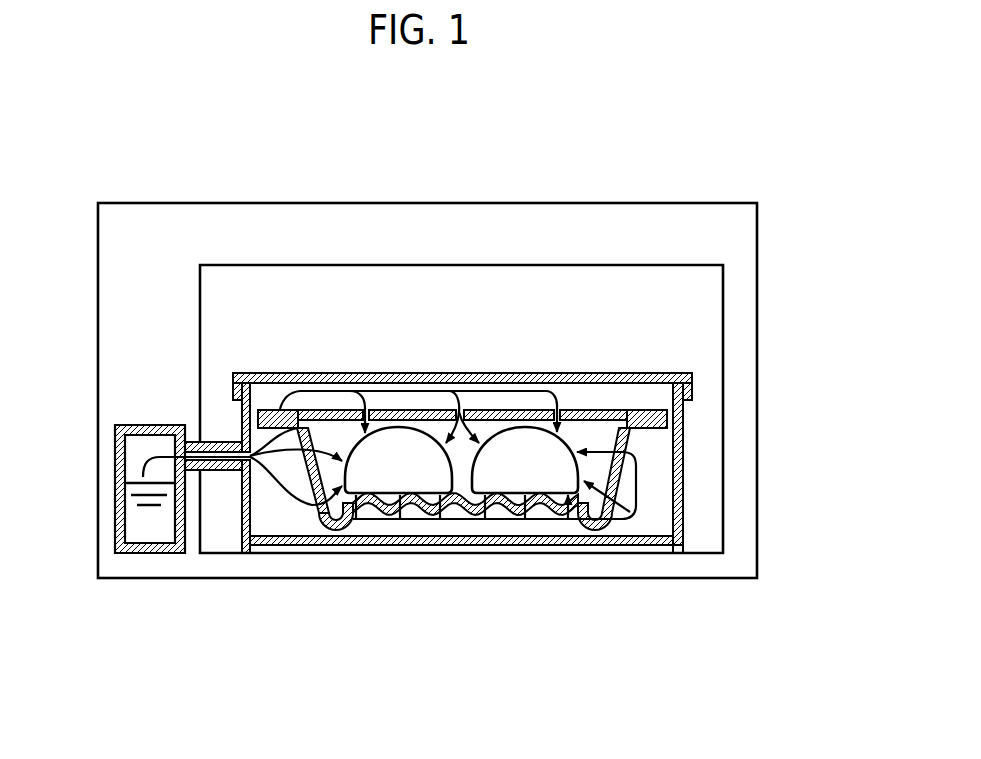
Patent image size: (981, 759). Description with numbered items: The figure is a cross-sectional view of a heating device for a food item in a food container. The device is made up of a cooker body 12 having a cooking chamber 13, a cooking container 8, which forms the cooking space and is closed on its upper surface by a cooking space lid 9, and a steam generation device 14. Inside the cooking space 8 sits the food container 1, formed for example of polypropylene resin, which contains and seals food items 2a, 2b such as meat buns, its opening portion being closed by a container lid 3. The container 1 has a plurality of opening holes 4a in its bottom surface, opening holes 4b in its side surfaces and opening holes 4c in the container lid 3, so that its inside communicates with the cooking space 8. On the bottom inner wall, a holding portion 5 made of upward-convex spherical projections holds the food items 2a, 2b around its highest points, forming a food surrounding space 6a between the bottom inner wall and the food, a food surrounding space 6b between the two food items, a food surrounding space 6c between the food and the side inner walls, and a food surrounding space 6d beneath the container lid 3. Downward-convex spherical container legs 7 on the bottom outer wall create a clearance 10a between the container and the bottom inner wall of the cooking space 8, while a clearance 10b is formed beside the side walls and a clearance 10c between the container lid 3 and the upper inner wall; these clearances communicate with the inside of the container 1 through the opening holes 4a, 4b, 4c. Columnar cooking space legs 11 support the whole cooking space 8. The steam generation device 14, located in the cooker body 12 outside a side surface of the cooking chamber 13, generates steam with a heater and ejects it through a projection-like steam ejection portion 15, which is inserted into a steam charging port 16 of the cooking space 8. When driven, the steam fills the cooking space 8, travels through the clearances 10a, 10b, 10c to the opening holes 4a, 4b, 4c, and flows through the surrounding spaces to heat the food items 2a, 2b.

The food container 1 is at (456, 424).
The food item 2a is at (395, 458).
The food item 2b is at (520, 458).
The container lid 3 is at (462, 264).
The opening holes 4a is at (465, 595).
The opening holes 4b is at (273, 747).
The opening holes 4c is at (680, 126).
The holding portion 5 is at (465, 579).
The food surrounding space 6a is at (540, 522).
The food surrounding space 6b is at (468, 430).
The food surrounding space 6c is at (325, 455).
The food surrounding space 6d is at (377, 427).
The container legs 7 is at (337, 714).
The cooking container 8 is at (440, 547).
The cooking space lid 9 is at (427, 404).
The clearance 10a is at (468, 524).
The clearance 10b is at (290, 505).
The clearance 10c is at (343, 390).
The cooking space legs 11 is at (695, 716).
The cooker body 12 is at (167, 293).
The cooking chamber 13 is at (215, 553).
The steam generation device 14 is at (140, 553).
The steam ejection portion 15 is at (198, 348).
The steam charging port 16 is at (224, 711).